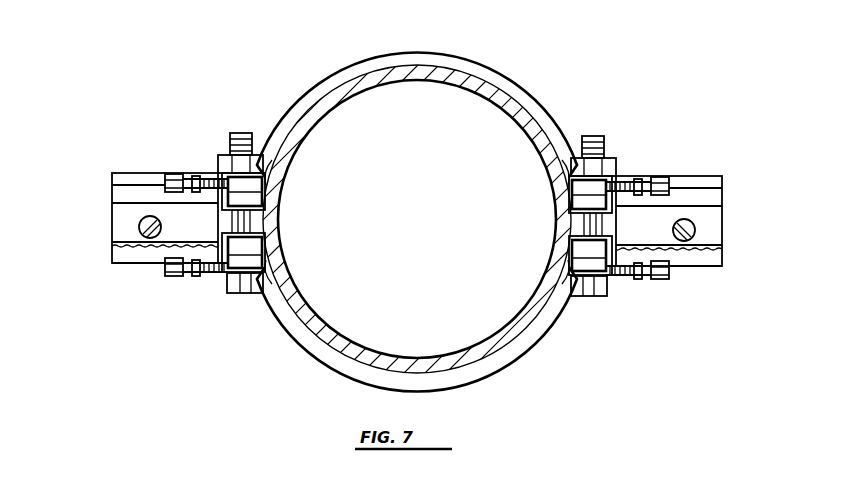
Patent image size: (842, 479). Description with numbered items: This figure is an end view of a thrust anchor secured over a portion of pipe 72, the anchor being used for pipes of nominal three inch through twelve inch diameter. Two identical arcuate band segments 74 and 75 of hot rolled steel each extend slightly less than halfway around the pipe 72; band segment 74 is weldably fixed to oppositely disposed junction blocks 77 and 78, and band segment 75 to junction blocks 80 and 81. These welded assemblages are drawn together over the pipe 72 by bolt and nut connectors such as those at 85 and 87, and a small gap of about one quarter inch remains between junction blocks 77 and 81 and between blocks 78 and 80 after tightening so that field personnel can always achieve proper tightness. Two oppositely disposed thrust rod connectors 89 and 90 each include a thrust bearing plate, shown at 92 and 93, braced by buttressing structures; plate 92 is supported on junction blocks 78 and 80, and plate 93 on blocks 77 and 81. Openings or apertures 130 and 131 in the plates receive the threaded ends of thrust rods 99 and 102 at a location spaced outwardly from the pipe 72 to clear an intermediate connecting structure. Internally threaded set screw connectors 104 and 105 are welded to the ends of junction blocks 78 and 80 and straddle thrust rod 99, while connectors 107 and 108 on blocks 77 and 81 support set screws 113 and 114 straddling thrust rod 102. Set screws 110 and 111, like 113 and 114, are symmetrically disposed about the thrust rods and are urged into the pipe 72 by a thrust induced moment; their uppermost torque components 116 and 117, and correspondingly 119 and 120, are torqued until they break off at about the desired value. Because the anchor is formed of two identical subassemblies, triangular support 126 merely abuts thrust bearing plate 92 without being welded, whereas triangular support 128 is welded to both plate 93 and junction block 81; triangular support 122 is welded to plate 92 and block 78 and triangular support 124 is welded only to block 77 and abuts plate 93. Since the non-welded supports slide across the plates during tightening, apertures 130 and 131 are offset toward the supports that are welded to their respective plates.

The pipe 72 is at (372, 88).
The arcuate band segment 74 is at (478, 72).
The arcuate band segment 75 is at (480, 365).
The junction block 77 is at (220, 170).
The junction block 78 is at (622, 168).
The junction block 80 is at (620, 273).
The junction block 81 is at (209, 283).
The bolt and nut connector 85 is at (598, 130).
The bolt and nut connector 87 is at (242, 132).
The thrust rod connector 89 is at (738, 100).
The thrust rod connector 90 is at (112, 153).
The thrust bearing plate 92 is at (712, 252).
The thrust bearing plate 93 is at (118, 216).
The thrust rod 99 is at (718, 208).
The thrust rod 102 is at (118, 248).
The set screw connector 104 is at (566, 165).
The set screw connector 105 is at (574, 300).
The set screw connector 107 is at (270, 165).
The set screw connector 108 is at (262, 298).
The set screw 110 is at (641, 170).
The set screw 111 is at (638, 285).
The set screw 113 is at (203, 170).
The set screw 114 is at (198, 290).
The torque component 116 is at (672, 176).
The torque component 117 is at (660, 272).
The torque component 119 is at (178, 178).
The torque component 120 is at (165, 278).
The triangular support 122 is at (708, 186).
The triangular support 124 is at (122, 193).
The triangular support 126 is at (718, 258).
The triangular support 128 is at (130, 265).
The opening or aperture 130 is at (700, 216).
The opening or aperture 131 is at (138, 230).